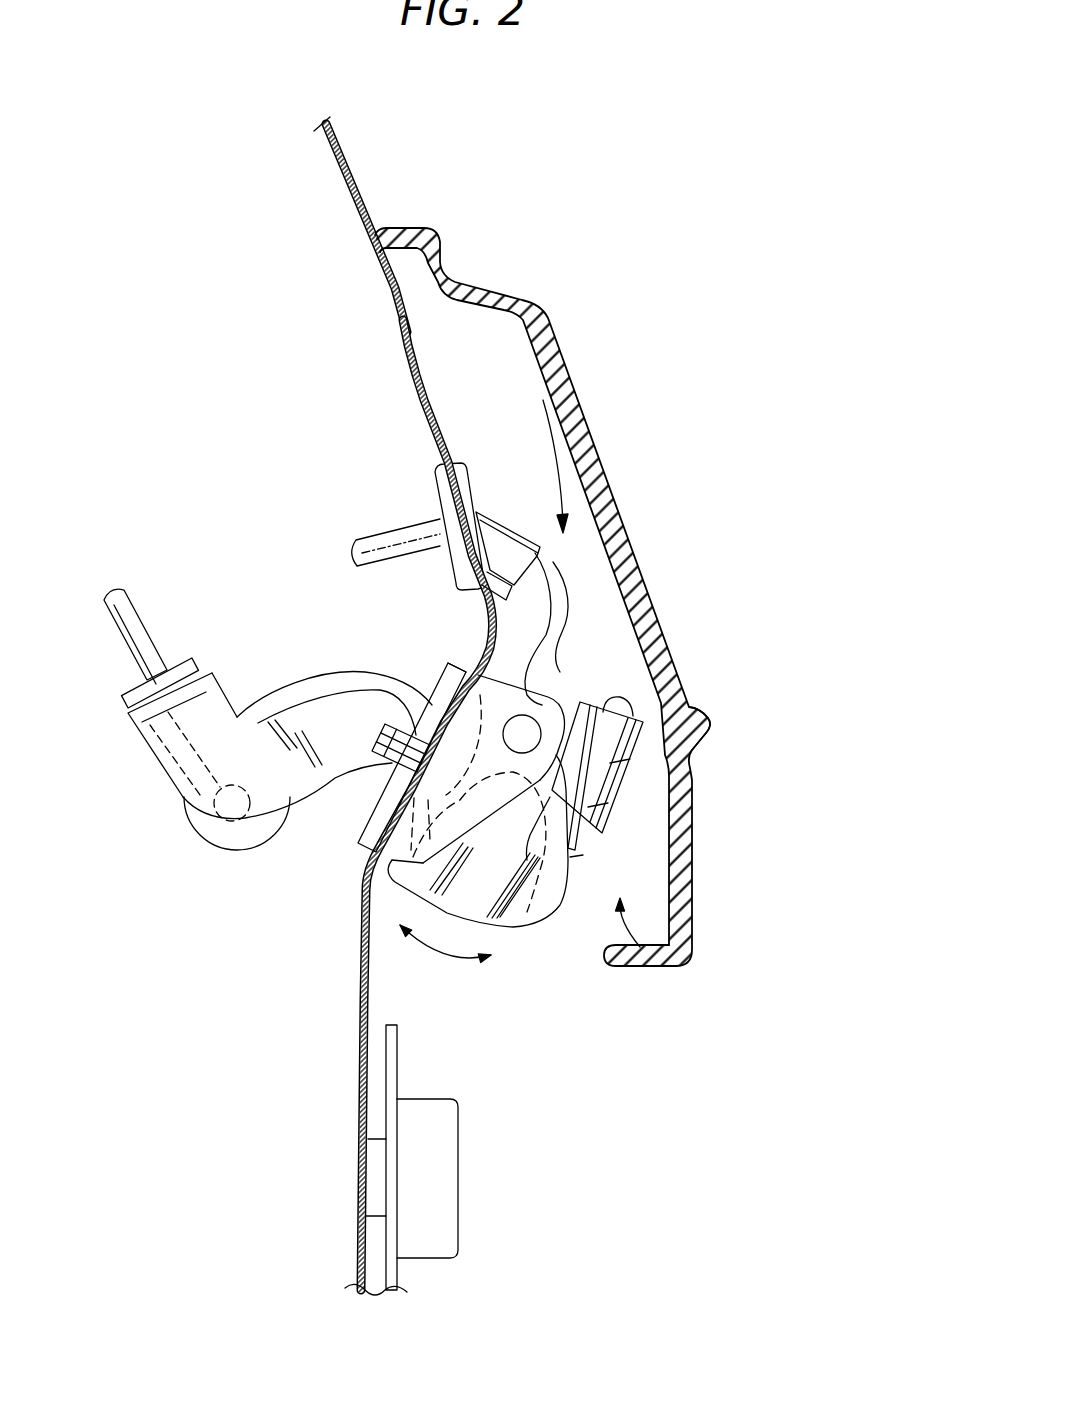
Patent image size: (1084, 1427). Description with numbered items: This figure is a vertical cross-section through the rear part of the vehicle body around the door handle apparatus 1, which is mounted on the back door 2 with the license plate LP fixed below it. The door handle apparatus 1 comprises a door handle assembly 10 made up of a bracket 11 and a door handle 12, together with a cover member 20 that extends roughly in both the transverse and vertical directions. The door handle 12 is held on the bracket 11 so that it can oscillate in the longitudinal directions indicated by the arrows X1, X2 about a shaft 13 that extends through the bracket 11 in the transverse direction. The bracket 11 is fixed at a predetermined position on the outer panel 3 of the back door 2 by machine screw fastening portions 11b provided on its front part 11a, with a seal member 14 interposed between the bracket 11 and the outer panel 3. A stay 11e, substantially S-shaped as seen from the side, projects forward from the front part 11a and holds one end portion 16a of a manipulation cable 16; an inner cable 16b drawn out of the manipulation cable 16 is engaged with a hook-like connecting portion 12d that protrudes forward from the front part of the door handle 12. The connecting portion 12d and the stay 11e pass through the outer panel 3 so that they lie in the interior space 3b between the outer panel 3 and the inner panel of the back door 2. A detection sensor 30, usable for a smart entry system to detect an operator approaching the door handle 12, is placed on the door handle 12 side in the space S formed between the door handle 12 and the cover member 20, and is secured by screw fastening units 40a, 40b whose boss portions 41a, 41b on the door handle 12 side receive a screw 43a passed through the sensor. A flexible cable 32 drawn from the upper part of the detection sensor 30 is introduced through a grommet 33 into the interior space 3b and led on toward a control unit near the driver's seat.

The door handle apparatus 1 is at (542, 597).
The back door 2 is at (350, 177).
The outer panel 3 is at (412, 393).
The interior space 3b is at (182, 505).
The door handle assembly 10 is at (557, 371).
The bracket 11 is at (487, 680).
The front part 11a is at (432, 670).
The machine screw fastening portion 11b is at (387, 722).
The stay 11e is at (222, 717).
The door handle 12 is at (548, 912).
The connecting portion 12d is at (233, 843).
The shaft 13 is at (527, 726).
The seal member 14 is at (455, 660).
The manipulation cable 16 is at (142, 623).
The end portion 16a is at (130, 698).
The inner cable 16b is at (165, 760).
The cover member 20 is at (547, 347).
The detection sensor 30 is at (674, 807).
The cable 32 is at (545, 608).
The grommet 33 is at (440, 488).
The screw fastening unit 40a is at (615, 830).
The screw fastening unit 40b is at (582, 778).
The boss portion 41a is at (605, 835).
The boss portion 41b is at (632, 785).
The screw 43a is at (683, 682).
The space S is at (643, 964).
The license plate LP is at (397, 1077).
The arrow X1 is at (434, 925).
The arrow X2 is at (502, 959).